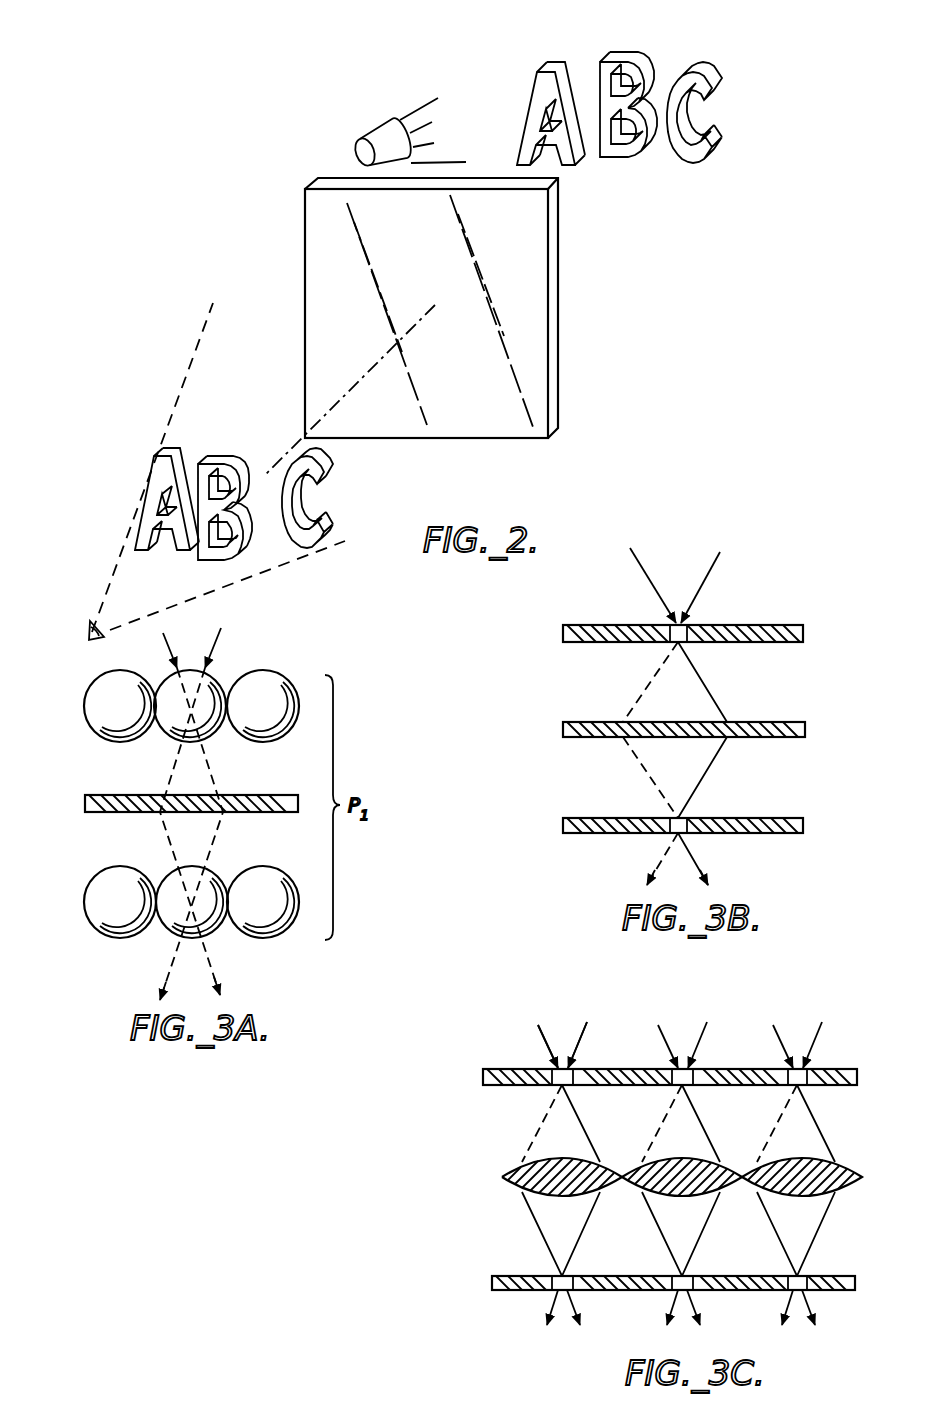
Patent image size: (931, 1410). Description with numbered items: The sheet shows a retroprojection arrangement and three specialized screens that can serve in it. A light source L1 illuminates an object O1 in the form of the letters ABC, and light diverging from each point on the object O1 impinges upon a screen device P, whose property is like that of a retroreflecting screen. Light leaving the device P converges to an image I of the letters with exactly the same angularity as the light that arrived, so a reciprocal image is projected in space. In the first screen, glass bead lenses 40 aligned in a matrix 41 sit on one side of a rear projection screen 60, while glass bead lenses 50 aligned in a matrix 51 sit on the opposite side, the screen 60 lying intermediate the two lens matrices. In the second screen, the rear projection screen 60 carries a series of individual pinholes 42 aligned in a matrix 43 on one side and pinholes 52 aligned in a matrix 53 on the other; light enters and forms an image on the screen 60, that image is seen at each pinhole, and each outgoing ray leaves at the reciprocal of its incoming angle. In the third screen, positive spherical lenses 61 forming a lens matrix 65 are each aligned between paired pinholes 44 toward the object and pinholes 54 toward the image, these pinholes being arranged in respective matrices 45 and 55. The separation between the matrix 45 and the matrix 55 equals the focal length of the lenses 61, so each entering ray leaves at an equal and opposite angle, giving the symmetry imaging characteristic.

In FIG. 2, the light source L1 is at (382, 138).
In FIG. 2, the object O1 is at (722, 72).
In FIG. 2, the device P is at (551, 250).
In FIG. 2, the image I is at (338, 463).
In FIG. 3A, the glass bead lenses 40 is at (178, 707).
In FIG. 3A, the matrix 41 is at (92, 735).
In FIG. 3A, the rear projection screen 60 is at (285, 795).
In FIG. 3B, the rear projection screen 60 is at (790, 722).
In FIG. 3A, the glass bead lenses 50 is at (176, 918).
In FIG. 3A, the matrix 51 is at (92, 927).
In FIG. 3B, the pinholes 42 is at (681, 625).
In FIG. 3B, the matrix 43 is at (790, 625).
In FIG. 3B, the pinholes 52 is at (681, 818).
In FIG. 3B, the matrix 53 is at (790, 818).
In FIG. 3C, the pinholes 44 is at (685, 1068).
In FIG. 3C, the matrix of pinholes 45 is at (801, 1068).
In FIG. 3C, the positive spherical lenses 61 is at (842, 1174).
In FIG. 3C, the lens matrix 65 is at (712, 1172).
In FIG. 3C, the matrix of pinholes 55 is at (838, 1277).
In FIG. 3C, the pinholes 54 is at (688, 1292).